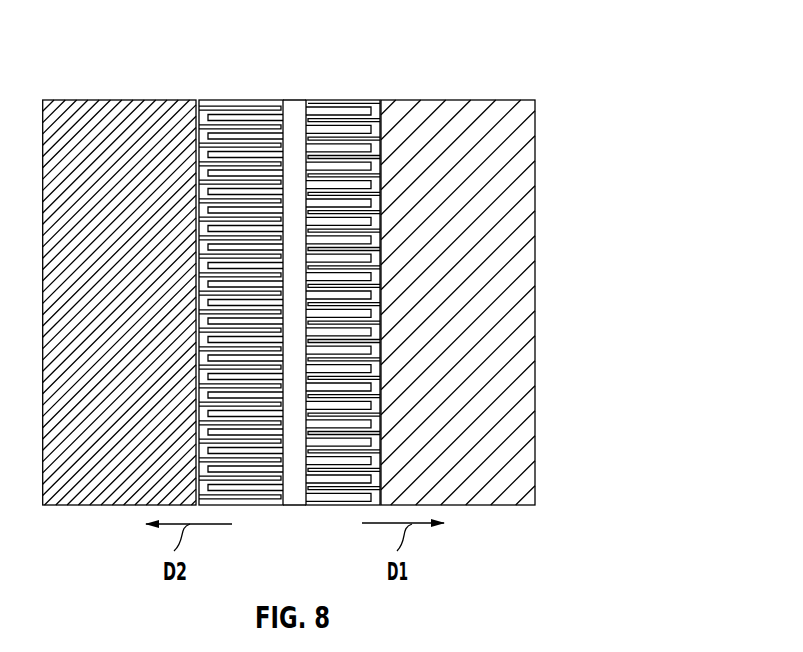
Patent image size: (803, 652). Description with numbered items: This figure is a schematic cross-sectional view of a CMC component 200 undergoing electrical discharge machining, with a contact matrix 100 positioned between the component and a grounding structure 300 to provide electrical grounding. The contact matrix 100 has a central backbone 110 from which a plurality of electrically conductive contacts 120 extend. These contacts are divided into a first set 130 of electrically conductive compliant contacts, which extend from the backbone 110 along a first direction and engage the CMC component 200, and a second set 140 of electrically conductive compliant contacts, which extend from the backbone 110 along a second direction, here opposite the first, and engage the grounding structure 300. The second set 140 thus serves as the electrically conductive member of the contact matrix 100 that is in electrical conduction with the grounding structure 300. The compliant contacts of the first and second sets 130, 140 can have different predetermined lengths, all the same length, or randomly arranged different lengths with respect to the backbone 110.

The contact matrix 100 is at (258, 55).
The backbone 110 is at (290, 490).
The plurality of electrically conductive contacts 120 is at (320, 66).
The first set of electrically conductive compliant contacts 130 is at (344, 132).
The second set of electrically conductive compliant contacts 140 is at (226, 132).
The CMC component 200 is at (472, 304).
The grounding structure 300 is at (135, 304).